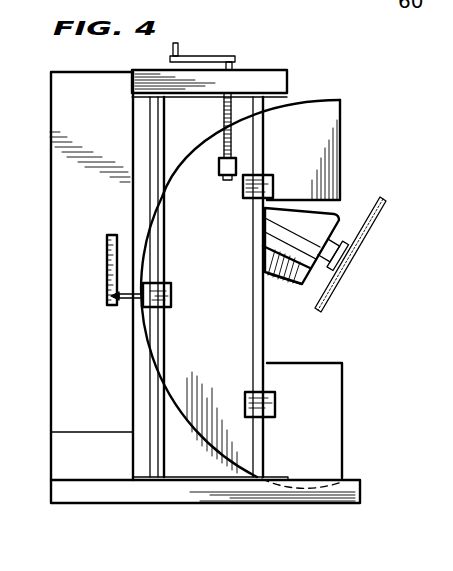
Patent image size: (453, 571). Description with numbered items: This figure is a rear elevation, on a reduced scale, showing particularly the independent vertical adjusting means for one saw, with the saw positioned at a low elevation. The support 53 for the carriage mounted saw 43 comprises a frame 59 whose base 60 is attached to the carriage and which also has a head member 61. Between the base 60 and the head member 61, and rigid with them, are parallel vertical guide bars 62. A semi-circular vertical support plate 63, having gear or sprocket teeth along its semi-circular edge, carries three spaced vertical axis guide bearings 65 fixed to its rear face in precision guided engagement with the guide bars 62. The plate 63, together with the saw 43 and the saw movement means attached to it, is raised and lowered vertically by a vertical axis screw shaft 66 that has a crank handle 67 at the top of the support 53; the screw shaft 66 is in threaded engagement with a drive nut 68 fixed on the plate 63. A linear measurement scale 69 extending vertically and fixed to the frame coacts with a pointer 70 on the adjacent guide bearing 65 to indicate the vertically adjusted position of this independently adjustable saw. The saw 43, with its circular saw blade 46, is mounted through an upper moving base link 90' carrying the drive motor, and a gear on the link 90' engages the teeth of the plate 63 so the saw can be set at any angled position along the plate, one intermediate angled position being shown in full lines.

The carriage mounted saw 43 is at (317, 227).
The saw blade 46 is at (378, 220).
The support 53 is at (273, 71).
The frame 59 is at (63, 193).
The base 60 is at (138, 492).
The head member 61 is at (273, 82).
The vertical guide bars 62 is at (253, 247).
The semi-circular vertical support plate 63 is at (228, 339).
The vertical axis guide bearings 65 is at (273, 184).
The vertical axis screw shaft 66 is at (227, 113).
The crank handle 67 is at (200, 55).
The drive nut 68 is at (218, 168).
The linear measurement scale 69 is at (107, 265).
The pointer 70 is at (132, 304).
The upper moving base link 90' is at (306, 311).